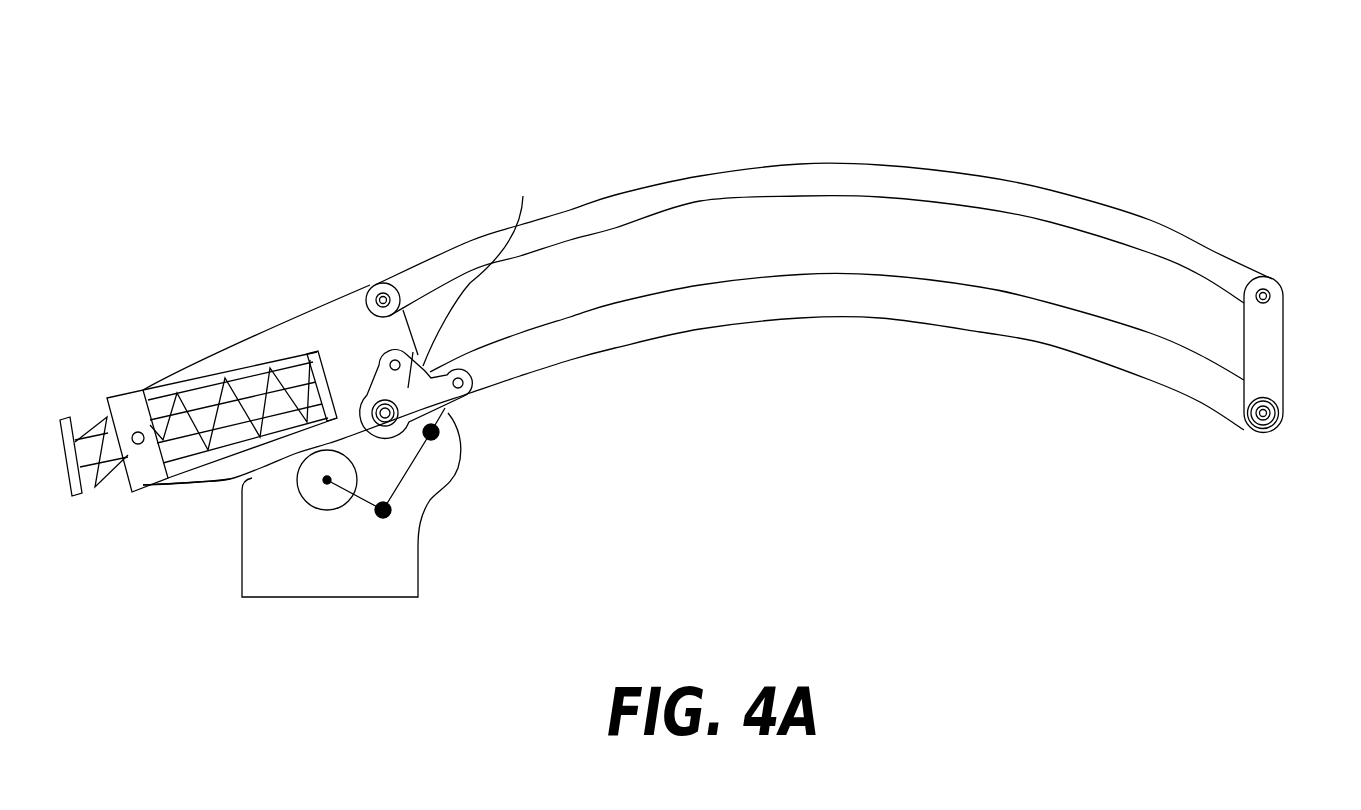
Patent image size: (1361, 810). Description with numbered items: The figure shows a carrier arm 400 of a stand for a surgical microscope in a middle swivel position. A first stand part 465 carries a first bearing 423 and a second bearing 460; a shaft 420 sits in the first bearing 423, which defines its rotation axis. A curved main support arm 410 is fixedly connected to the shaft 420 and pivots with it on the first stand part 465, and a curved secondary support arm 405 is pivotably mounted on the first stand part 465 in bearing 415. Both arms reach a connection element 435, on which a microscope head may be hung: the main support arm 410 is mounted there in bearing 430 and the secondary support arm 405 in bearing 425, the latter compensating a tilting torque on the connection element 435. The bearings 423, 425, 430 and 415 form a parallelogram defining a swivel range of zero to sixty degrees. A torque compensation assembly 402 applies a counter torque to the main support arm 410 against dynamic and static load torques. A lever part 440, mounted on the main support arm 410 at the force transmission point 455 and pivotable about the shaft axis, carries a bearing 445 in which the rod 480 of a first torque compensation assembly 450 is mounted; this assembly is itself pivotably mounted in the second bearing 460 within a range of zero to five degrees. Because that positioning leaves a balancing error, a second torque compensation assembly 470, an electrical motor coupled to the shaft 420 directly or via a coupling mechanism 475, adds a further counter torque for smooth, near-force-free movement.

The carrier arm 400 is at (1003, 107).
The torque compensation assembly 402 is at (212, 251).
The secondary support arm 405 is at (690, 200).
The main support arm 410 is at (707, 310).
The bearing 415 is at (396, 300).
The shaft 420 is at (447, 413).
The first bearing 423 is at (230, 480).
The bearing 425 is at (1275, 282).
The bearing 430 is at (1273, 434).
The connection element 435 is at (1270, 360).
The lever part 440 is at (469, 277).
The bearing 445 is at (388, 351).
The first torque compensation assembly 450 is at (226, 375).
The force transmission point 455 is at (471, 386).
The second bearing 460 is at (140, 444).
The first stand part 465 is at (242, 570).
The second torque compensation assembly 470 is at (330, 505).
The coupling mechanism 475 is at (433, 497).
The rod 480 is at (338, 378).